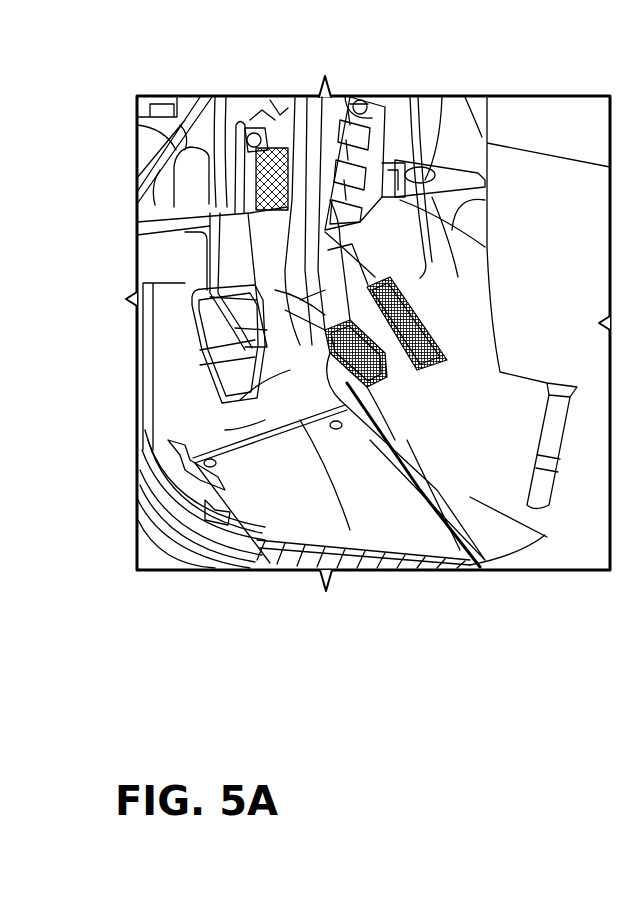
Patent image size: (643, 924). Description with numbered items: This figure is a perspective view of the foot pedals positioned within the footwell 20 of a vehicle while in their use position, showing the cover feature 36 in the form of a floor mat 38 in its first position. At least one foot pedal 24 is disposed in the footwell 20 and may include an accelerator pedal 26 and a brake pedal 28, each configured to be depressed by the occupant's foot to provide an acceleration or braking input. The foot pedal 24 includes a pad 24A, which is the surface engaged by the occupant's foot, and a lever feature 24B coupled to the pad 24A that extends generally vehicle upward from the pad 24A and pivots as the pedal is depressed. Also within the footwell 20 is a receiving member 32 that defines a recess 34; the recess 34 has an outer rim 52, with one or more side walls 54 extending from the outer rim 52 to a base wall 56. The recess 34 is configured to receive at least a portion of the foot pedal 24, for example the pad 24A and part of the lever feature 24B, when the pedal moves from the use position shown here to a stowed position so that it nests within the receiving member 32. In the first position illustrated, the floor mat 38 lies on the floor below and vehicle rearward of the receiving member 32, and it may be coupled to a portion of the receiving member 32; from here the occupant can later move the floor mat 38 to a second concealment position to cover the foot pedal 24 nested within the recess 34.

The footwell 20 is at (499, 446).
The foot pedal 24 is at (434, 374).
The pad 24A is at (368, 277).
The lever feature 24B is at (300, 98).
The accelerator pedal 26 is at (430, 312).
The brake pedal 28 is at (226, 428).
The receiving member 32 is at (203, 419).
The recess 34 is at (225, 430).
The cover feature 36 is at (382, 522).
The floor mat 38 is at (343, 515).
The outer rim 52 is at (207, 363).
The side walls 54 is at (228, 270).
The base wall 56 is at (207, 320).